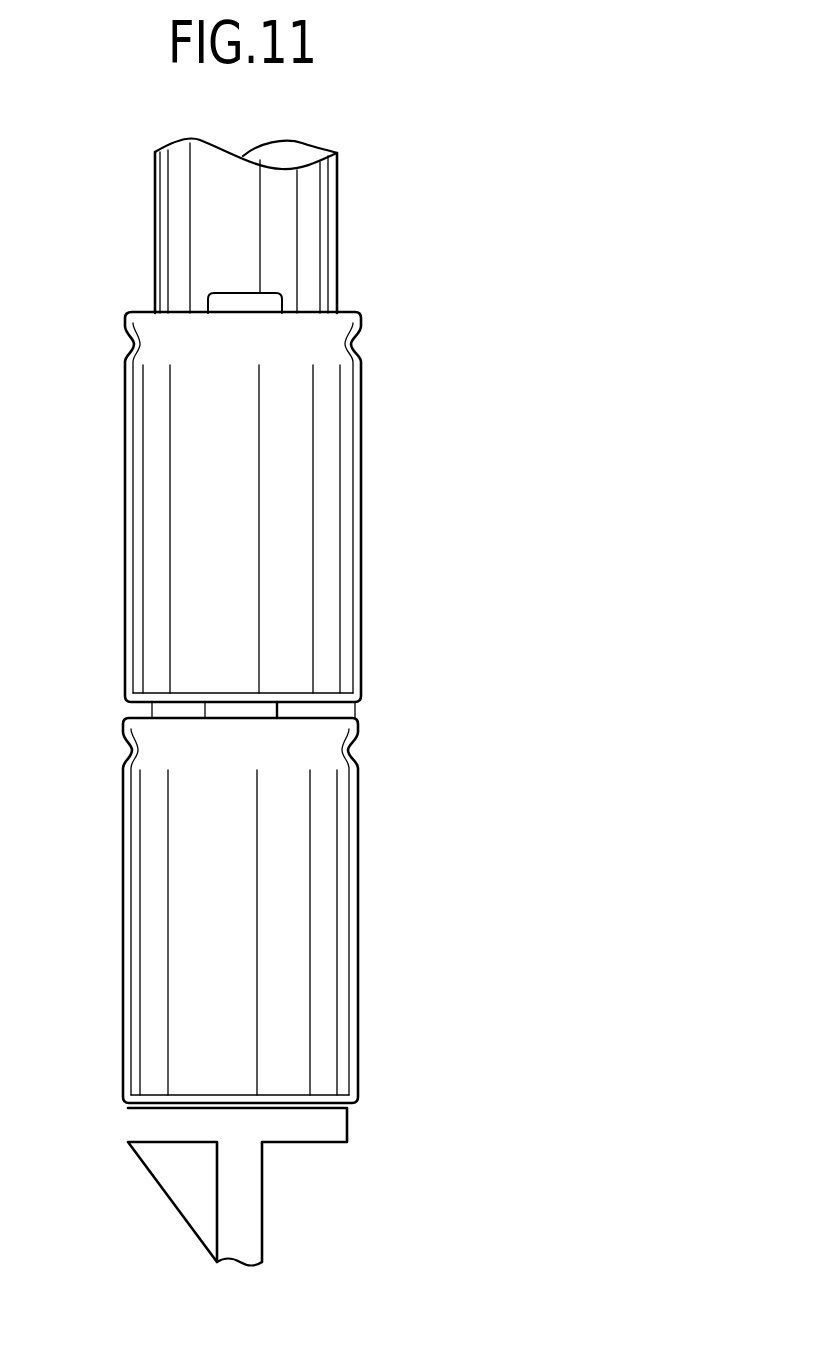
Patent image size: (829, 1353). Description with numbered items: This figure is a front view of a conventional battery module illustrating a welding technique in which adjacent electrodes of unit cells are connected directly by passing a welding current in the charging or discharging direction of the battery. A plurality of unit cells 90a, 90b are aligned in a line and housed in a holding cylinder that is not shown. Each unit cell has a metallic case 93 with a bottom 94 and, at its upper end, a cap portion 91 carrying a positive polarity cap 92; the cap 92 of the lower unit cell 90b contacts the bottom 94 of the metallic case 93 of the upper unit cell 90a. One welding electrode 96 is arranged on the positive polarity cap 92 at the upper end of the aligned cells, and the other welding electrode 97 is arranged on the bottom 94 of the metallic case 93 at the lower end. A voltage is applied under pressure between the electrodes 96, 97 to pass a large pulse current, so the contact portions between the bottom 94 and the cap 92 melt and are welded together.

The unit cell 90a is at (390, 527).
The unit cell 90b is at (390, 912).
The cap 91 is at (143, 309).
The positive polarity cap 92 is at (220, 306).
The metallic case 93 is at (153, 532).
The bottom 94 is at (152, 703).
The welding electrode 96 is at (310, 232).
The welding electrode 97 is at (332, 1118).